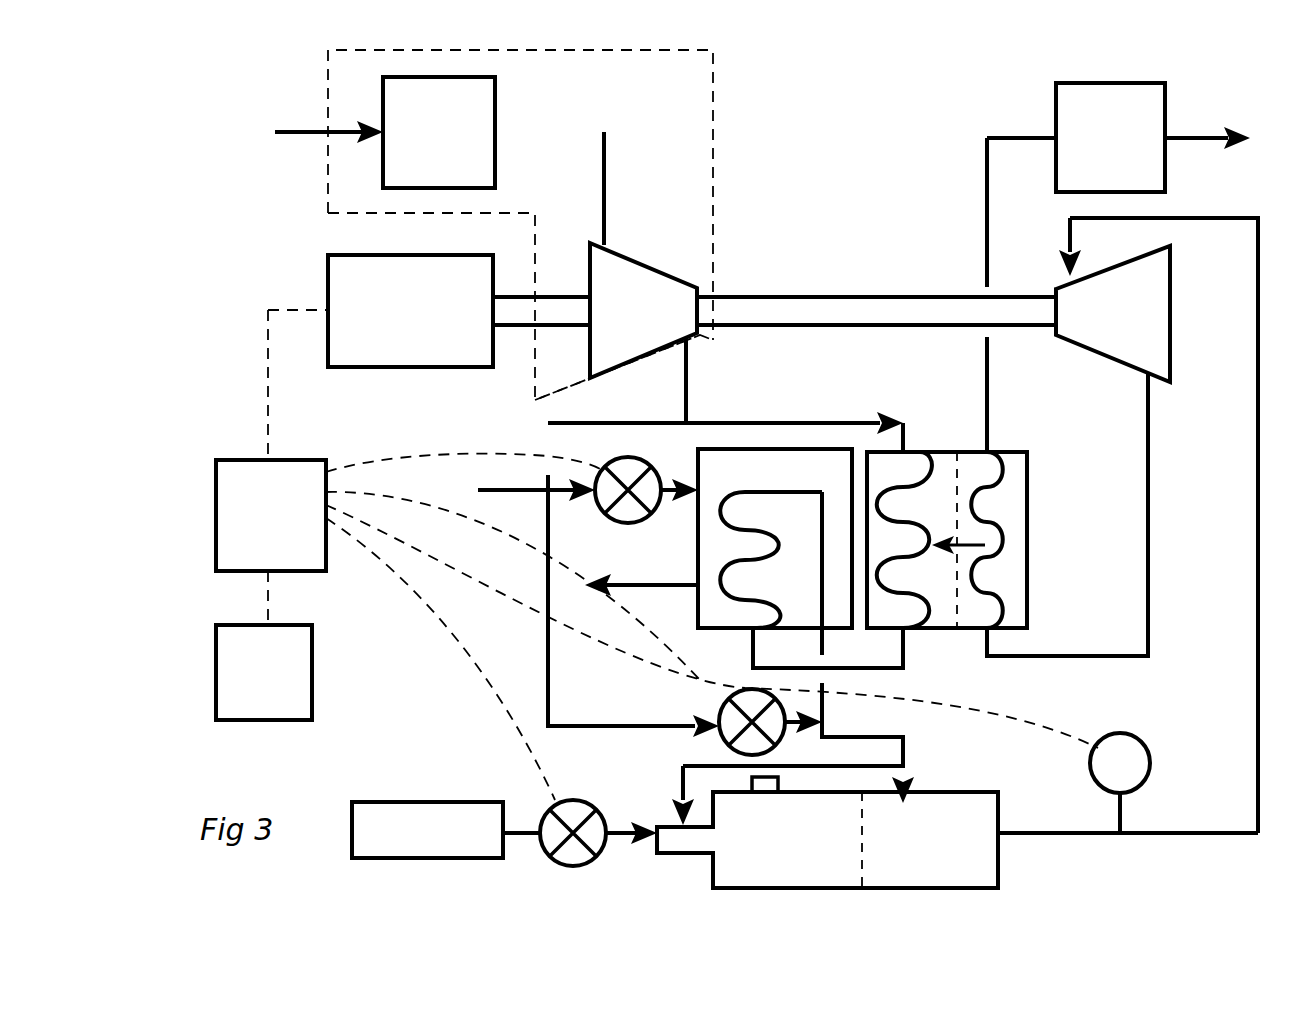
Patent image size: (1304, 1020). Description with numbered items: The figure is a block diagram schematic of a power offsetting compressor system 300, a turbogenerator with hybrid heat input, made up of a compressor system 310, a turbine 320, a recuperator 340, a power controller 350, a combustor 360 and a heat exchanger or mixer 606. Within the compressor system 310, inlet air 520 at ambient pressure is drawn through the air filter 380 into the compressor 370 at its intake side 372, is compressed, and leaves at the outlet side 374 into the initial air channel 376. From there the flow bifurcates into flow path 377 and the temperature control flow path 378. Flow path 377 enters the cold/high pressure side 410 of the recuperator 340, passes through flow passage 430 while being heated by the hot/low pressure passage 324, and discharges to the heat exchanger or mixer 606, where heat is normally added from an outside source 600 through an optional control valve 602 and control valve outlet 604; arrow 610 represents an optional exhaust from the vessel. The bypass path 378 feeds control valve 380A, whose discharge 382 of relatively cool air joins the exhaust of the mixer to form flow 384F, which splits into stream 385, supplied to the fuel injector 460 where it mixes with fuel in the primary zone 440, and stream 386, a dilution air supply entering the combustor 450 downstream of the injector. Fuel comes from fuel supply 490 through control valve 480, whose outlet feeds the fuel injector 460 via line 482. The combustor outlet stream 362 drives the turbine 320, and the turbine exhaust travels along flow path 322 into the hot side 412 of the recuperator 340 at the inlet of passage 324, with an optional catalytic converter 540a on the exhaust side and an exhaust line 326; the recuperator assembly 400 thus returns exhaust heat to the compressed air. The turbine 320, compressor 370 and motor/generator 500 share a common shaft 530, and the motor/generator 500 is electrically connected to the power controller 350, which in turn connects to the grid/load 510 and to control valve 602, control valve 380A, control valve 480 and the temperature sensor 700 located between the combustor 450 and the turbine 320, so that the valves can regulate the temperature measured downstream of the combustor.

The power offsetting compressor system 300 is at (224, 110).
The air filter 380 is at (497, 92).
The inlet air 520 is at (305, 140).
The compressor system 310 is at (713, 133).
The motor/generator 500 is at (395, 257).
The compressor 370 is at (650, 270).
The intake side 372 is at (606, 247).
The outlet side 374 is at (676, 341).
The initial air channel 376 is at (686, 360).
The common shaft 530 is at (835, 296).
The recuperator assembly 400 is at (805, 362).
The turbine 320 is at (1078, 366).
The catalytic converter 540a is at (1068, 84).
The exhaust line 326 is at (1036, 136).
The combustor outlet stream 362 is at (1258, 420).
The recuperator 340 is at (1012, 452).
The flow path 322 is at (1150, 568).
The flow path 377 is at (748, 423).
The cold/high pressure side 410 is at (905, 440).
The flow passage 430 is at (940, 450).
The hot/low pressure passage 324 is at (1004, 512).
The hot side 412 is at (1030, 522).
The control valve 602 is at (656, 458).
The outside source 600 is at (536, 479).
The control valve outlet 604 is at (672, 488).
The heat exchanger or mixer 606 is at (748, 458).
The optional exhaust 610 is at (641, 569).
The power controller 350 is at (328, 470).
The grid/load 510 is at (312, 690).
The temperature control flow path 378 is at (548, 722).
The control valve 380A is at (728, 698).
The discharge 382 is at (792, 722).
The flow 384F is at (856, 738).
The stream 385 is at (688, 792).
The stream 386 is at (903, 778).
The primary zone 440 is at (780, 782).
The combustor 450 is at (978, 790).
The combustor 360 is at (990, 895).
The fuel injector 460 is at (655, 818).
The fuel supply 490 is at (420, 802).
The control valve 480 is at (555, 860).
The fuel line 482 is at (616, 840).
The temperature sensor 700 is at (1128, 735).